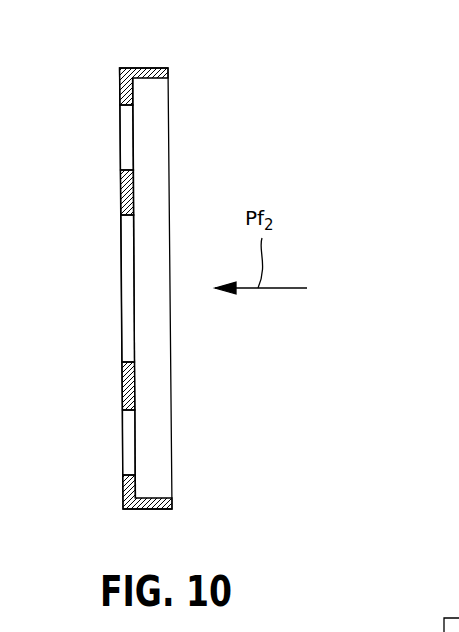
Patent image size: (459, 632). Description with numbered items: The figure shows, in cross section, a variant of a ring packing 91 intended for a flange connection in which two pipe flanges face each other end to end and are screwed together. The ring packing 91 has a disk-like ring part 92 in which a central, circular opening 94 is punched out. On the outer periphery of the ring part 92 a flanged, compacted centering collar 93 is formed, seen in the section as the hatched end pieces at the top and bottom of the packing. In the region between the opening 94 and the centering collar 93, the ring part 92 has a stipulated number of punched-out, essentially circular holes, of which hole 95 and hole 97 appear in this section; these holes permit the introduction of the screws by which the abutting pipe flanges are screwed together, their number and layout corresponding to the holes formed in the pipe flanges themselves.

The ring packing 91 is at (143, 258).
The ring part 92 is at (121, 190).
The centering collar 93 is at (157, 68).
The opening 94 is at (122, 290).
The hole 95 is at (121, 137).
The hole 97 is at (124, 464).